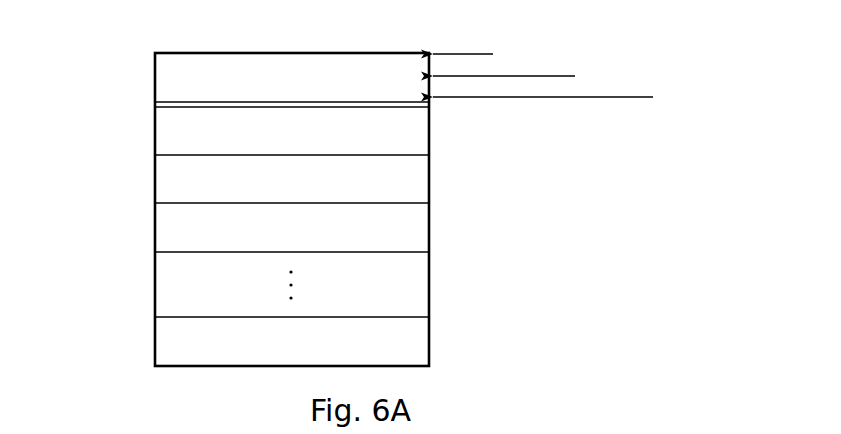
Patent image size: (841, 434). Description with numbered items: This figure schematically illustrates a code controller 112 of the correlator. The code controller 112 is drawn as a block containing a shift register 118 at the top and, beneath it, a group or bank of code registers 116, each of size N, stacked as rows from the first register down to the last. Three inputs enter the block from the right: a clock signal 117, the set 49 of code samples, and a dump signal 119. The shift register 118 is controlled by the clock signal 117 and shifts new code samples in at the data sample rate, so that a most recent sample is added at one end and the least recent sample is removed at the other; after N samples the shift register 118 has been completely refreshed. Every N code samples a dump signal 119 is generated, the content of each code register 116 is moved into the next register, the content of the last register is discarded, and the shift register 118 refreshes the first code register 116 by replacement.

The code controller 112 is at (96, 62).
The shift register 118 is at (166, 86).
The code register 116 is at (132, 360).
The clock signal 117 is at (463, 50).
The set of N code samples 49 is at (552, 72).
The dump signal 119 is at (515, 99).